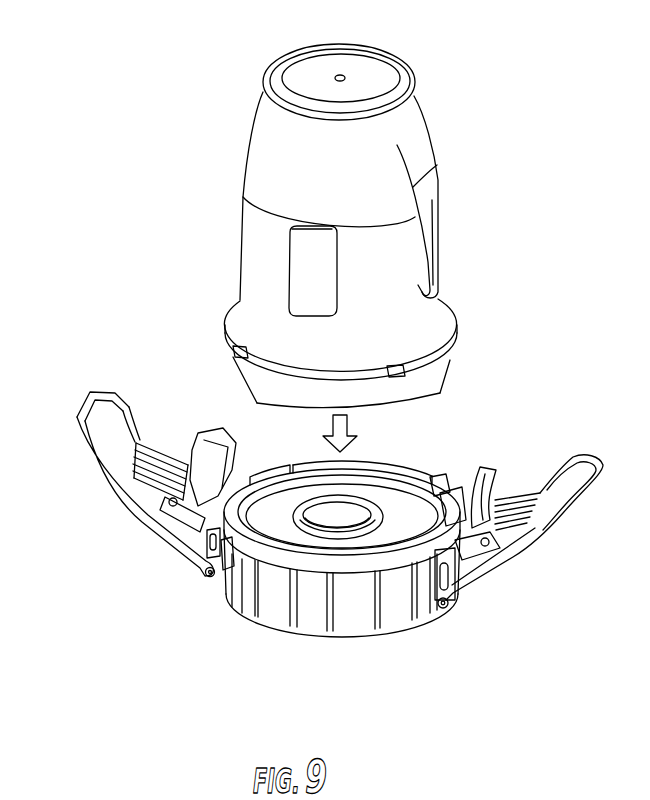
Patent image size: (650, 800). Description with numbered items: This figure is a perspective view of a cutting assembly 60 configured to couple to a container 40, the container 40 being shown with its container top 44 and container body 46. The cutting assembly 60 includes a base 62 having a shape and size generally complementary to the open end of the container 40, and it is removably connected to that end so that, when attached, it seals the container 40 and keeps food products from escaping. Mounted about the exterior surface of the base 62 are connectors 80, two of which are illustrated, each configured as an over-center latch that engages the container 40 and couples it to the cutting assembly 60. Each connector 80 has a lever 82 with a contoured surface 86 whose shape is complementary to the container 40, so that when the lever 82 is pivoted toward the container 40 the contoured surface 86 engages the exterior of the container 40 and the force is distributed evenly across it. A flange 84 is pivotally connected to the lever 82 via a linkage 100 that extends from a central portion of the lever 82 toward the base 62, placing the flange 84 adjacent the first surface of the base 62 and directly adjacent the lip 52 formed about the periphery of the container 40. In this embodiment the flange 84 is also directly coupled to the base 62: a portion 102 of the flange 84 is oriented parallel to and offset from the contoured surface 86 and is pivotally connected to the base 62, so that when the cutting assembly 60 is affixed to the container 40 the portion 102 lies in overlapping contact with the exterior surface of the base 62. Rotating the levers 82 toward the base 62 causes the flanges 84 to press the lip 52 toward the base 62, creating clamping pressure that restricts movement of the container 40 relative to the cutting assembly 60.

The container 40 is at (174, 64).
The container top 44 is at (375, 46).
The container body 46 is at (380, 157).
The lip 52 is at (442, 328).
The cutting assembly 60 is at (248, 628).
The base 62 is at (385, 602).
The connector 80 is at (127, 503).
The lever 82 is at (560, 517).
The flange 84 is at (212, 512).
The contoured surface 86 is at (212, 430).
The linkage 100 is at (160, 445).
The portion 102 is at (177, 557).